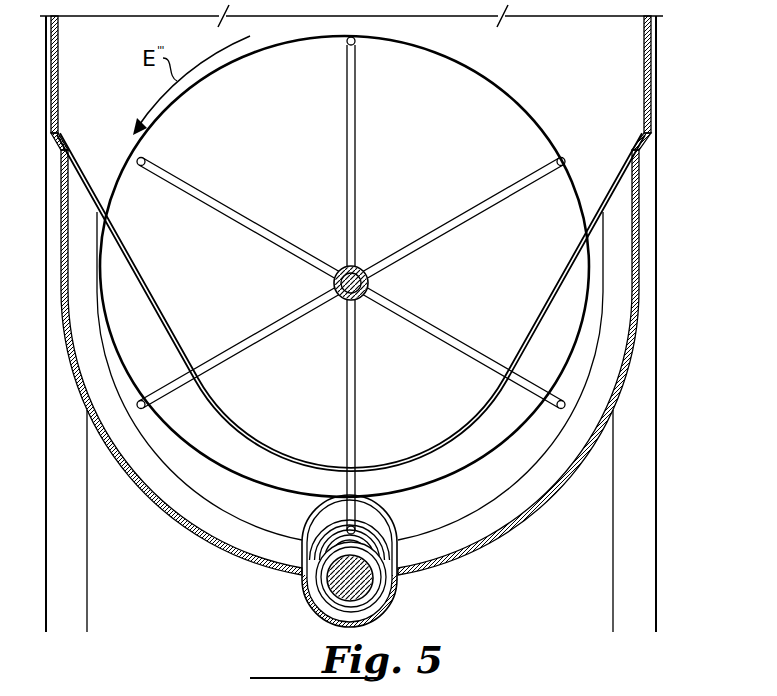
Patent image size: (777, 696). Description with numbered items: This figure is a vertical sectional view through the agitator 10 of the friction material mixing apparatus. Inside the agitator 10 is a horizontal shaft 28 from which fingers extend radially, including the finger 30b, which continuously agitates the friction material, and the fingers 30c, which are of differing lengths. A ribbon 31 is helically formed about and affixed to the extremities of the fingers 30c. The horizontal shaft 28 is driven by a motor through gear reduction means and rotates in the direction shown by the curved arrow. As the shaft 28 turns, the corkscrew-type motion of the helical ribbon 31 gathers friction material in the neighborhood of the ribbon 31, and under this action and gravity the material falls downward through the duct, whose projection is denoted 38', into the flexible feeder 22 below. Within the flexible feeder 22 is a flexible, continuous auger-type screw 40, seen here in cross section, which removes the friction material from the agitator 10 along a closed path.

The agitator 10 is at (658, 101).
The flexible feeder 22 is at (308, 547).
The horizontal shaft 28 is at (365, 270).
The finger 30b is at (356, 433).
The fingers 30c is at (254, 223).
The ribbon 31 is at (511, 96).
The projection of duct 38' is at (384, 362).
The flexible continuous screw 40 is at (363, 583).